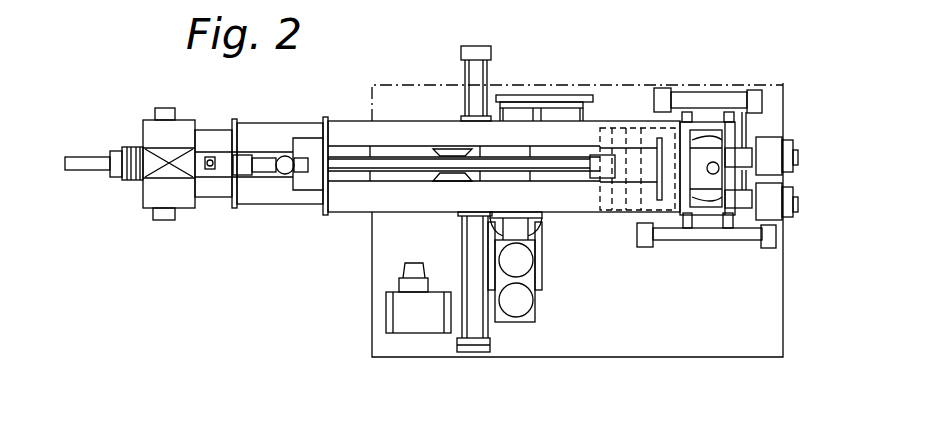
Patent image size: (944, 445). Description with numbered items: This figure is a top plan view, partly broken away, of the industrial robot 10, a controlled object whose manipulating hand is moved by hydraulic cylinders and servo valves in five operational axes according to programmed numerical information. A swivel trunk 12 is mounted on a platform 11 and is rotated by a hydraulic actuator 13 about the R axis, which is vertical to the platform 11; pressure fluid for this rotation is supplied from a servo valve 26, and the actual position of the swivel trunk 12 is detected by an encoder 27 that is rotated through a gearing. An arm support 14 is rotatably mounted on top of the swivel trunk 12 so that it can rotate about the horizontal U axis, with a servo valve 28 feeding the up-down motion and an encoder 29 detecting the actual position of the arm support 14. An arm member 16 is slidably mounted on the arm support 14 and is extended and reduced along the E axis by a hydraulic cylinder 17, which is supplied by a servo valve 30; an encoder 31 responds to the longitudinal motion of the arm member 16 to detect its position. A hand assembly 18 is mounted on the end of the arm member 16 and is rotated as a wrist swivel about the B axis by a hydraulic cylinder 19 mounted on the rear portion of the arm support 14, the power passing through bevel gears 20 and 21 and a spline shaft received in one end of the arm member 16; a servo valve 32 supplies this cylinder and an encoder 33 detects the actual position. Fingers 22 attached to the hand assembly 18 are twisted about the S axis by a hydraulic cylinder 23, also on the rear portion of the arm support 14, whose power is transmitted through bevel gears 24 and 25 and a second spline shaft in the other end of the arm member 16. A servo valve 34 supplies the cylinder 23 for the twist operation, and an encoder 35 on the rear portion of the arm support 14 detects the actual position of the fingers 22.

The industrial robot 10 is at (515, 82).
The platform 11 is at (634, 329).
The swivel trunk 12 is at (548, 176).
The hydraulic actuator 13 is at (472, 67).
The arm support 14 is at (578, 188).
The arm member 16 is at (207, 180).
The hydraulic cylinder 17 is at (352, 160).
The hand assembly 18 is at (146, 151).
The hydraulic cylinder 19 is at (732, 97).
The bevel gear 20 is at (710, 130).
The bevel gear 21 is at (700, 132).
The finger members 22 is at (96, 160).
The hydraulic cylinder 23 is at (752, 240).
The bevel gear 24 is at (712, 212).
The bevel gear 25 is at (703, 205).
The servo valve 26 is at (400, 270).
The encoder 27 is at (520, 262).
The servo valve 28 is at (530, 237).
The encoder 29 is at (575, 133).
The servo valve 30 is at (661, 240).
The encoder 31 is at (715, 150).
The servo valve 32 is at (622, 127).
The encoder 33 is at (784, 155).
The servo valve 34 is at (645, 207).
The encoder 35 is at (784, 198).